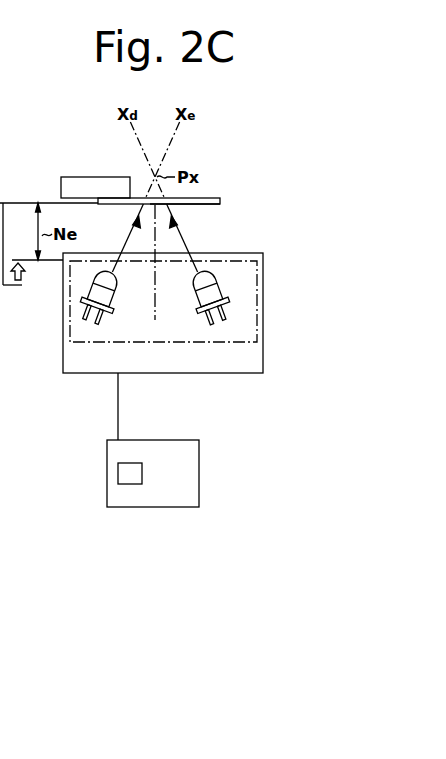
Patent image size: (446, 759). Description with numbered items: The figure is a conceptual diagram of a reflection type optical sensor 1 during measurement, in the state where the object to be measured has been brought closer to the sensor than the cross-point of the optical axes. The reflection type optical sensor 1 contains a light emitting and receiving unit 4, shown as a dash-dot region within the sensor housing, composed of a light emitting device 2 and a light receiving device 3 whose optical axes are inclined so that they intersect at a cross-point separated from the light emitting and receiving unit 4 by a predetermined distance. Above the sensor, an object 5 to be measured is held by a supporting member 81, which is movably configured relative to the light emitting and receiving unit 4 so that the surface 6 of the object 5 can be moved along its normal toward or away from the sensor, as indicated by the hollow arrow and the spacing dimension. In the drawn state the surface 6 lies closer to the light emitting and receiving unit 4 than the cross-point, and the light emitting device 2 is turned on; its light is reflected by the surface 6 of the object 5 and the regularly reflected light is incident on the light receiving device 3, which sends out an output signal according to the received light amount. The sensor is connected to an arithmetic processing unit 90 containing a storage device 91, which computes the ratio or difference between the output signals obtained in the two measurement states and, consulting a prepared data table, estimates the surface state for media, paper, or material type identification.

The supporting member 81 is at (82, 177).
The object to be measured 5 is at (207, 199).
The surface of the object 6 is at (207, 205).
The reflection type optical sensor 1 is at (263, 253).
The light emitting and receiving unit 4 is at (221, 261).
The light emitting device 2 is at (102, 288).
The light receiving device 3 is at (213, 290).
The arithmetic processing unit 90 is at (178, 507).
The storage device 91 is at (125, 484).